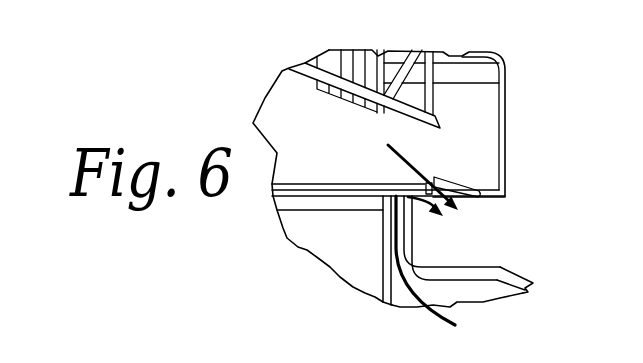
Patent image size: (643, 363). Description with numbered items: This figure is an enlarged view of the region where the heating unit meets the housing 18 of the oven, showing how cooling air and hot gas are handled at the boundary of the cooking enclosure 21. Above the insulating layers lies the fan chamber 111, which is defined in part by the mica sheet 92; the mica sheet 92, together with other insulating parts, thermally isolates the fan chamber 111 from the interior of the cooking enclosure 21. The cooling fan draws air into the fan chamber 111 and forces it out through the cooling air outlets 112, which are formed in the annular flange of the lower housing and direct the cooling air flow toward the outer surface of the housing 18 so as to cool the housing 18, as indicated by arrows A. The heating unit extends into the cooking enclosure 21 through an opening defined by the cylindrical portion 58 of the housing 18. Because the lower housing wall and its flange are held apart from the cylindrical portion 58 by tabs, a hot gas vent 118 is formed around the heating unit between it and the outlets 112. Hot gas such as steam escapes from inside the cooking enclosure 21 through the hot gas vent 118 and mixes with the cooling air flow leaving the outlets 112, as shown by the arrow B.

The fan chamber 111 is at (290, 83).
The mica sheet 92 is at (303, 183).
The cooling air outlets 112 is at (458, 184).
The hot gas vent 118 is at (374, 222).
The cylindrical portion 58 is at (407, 228).
The housing 18 is at (470, 265).
The cooking enclosure 21 is at (522, 276).
The arrows A is at (392, 152).
The arrow B is at (452, 306).